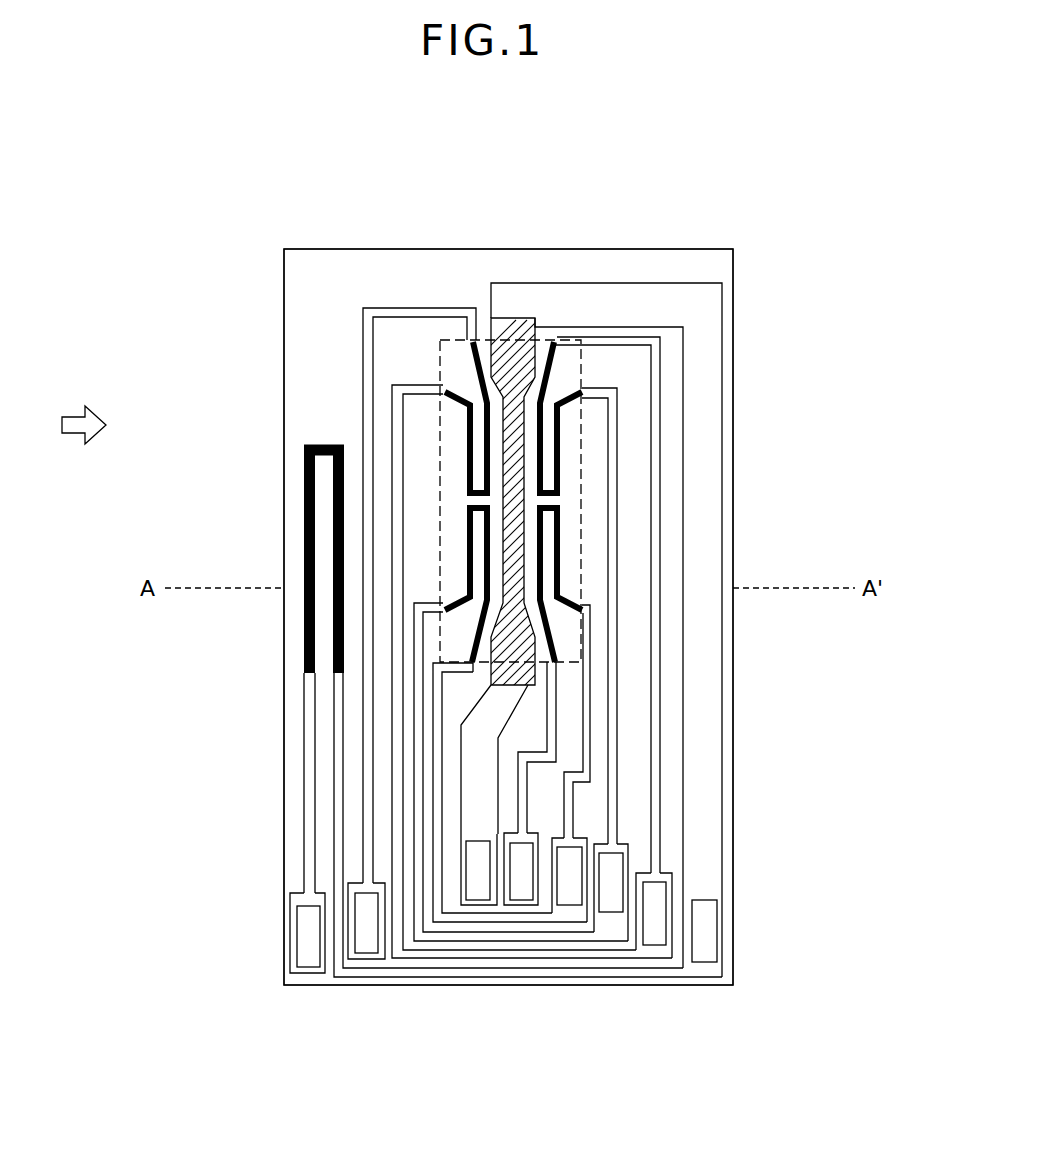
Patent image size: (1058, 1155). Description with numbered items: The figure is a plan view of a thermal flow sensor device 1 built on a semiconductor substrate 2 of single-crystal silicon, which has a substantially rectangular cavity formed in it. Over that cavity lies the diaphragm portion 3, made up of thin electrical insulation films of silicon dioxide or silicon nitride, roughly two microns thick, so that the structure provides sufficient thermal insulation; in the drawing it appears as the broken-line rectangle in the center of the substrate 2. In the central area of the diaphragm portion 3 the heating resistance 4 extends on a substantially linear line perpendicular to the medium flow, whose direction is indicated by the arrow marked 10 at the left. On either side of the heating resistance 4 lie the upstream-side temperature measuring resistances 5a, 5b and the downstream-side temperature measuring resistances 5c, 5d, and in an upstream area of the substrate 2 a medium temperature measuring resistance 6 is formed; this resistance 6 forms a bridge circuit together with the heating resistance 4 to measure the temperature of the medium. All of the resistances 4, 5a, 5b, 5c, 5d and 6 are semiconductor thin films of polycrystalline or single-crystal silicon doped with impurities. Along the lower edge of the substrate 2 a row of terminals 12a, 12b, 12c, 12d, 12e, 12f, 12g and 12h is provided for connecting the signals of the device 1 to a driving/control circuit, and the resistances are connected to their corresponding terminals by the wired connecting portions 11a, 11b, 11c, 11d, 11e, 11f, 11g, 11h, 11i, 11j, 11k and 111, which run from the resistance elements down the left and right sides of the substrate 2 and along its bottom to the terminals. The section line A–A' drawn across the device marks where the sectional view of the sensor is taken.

The thermal flow sensor device 1 is at (681, 240).
The semiconductor substrate 2 is at (547, 262).
The diaphragm portion 3 is at (578, 416).
The heating resistance 4 is at (510, 413).
The upstream-side temperature measuring resistance 5a is at (478, 460).
The upstream-side temperature measuring resistance 5b is at (467, 532).
The downstream-side temperature measuring resistance 5c is at (557, 463).
The downstream-side temperature measuring resistance 5d is at (557, 553).
The medium temperature measuring resistance 6 is at (306, 490).
The gas flow direction 10 is at (88, 398).
The wired connecting portion 11a is at (308, 723).
The wired connecting portion 11b is at (337, 767).
The wired connecting portion 11c is at (363, 815).
The wired connecting portion 11d is at (395, 858).
The wired connecting portion 11e is at (417, 935).
The wired connecting portion 11f is at (452, 918).
The wired connecting portion 11g is at (513, 712).
The wired connecting portion 11h is at (553, 748).
The wired connecting portion 11i is at (587, 773).
The wired connecting portion 11j is at (617, 807).
The wired connecting portion 11k is at (660, 847).
The wired connecting portion 111 is at (703, 883).
The terminal 12a is at (307, 943).
The terminal 12b is at (365, 953).
The terminal 12c is at (477, 898).
The terminal 12d is at (520, 898).
The terminal 12e is at (565, 903).
The terminal 12f is at (610, 910).
The terminal 12g is at (653, 945).
The terminal 12h is at (703, 955).